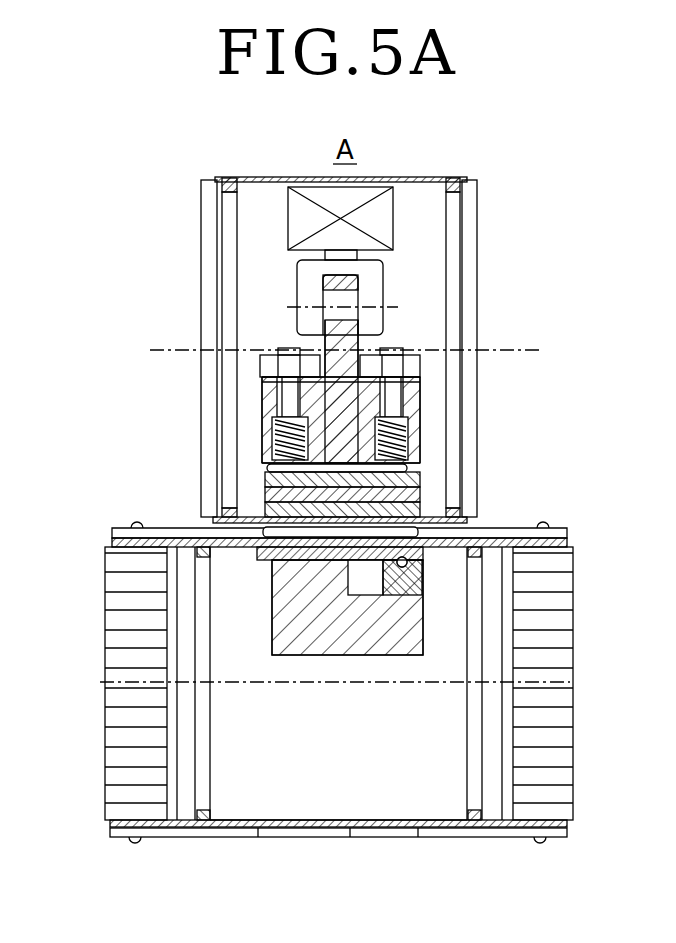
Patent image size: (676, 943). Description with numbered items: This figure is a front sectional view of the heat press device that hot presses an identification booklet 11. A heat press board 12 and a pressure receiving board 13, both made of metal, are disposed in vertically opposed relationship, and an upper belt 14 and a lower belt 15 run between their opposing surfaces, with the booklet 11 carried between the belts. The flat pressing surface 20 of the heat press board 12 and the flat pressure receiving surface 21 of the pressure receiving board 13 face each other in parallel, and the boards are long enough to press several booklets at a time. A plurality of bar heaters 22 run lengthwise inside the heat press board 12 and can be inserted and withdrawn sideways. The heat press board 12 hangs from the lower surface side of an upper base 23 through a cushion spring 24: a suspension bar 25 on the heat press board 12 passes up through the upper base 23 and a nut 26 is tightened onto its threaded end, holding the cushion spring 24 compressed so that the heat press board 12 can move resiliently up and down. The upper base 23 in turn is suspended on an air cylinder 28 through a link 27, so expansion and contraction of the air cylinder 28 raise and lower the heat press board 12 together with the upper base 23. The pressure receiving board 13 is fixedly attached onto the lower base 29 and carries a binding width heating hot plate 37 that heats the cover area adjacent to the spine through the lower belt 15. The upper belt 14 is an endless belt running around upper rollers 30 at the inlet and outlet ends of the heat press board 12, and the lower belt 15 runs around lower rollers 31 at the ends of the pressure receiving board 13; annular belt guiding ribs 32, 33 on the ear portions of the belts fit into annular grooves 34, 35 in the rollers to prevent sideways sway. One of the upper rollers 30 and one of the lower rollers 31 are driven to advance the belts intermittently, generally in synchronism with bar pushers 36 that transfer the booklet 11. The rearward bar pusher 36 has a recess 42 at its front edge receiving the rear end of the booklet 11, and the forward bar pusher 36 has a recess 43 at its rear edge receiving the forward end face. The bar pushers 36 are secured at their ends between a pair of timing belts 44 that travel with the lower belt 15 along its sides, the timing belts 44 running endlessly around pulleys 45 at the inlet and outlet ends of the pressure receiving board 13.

The identification booklet 11 is at (340, 600).
The heat press board 12 is at (418, 408).
The pressure receiving board 13 is at (290, 656).
The upper belt 14 is at (272, 181).
The lower belt 15 is at (455, 554).
The pressing surface 20 is at (420, 492).
The pressure receiving surface 21 is at (297, 562).
The bar heater 22 is at (405, 458).
The upper base 23 is at (268, 384).
The cushion spring 24 is at (266, 478).
The suspension bar 25 is at (287, 407).
The nut 26 is at (268, 357).
The link 27 is at (296, 293).
The air cylinder 28 is at (347, 250).
The lower base 29 is at (320, 636).
The upper roller 30 is at (416, 203).
The lower roller 31 is at (425, 788).
The annular belt guiding rib 32 is at (450, 186).
The annular belt guiding rib 33 is at (435, 547).
The annular groove 34 is at (455, 300).
The annular groove 35 is at (478, 713).
The bar pusher 36 is at (525, 523).
The binding width heating hot plate 37 is at (413, 650).
The recess 42 is at (302, 834).
The recess 43 is at (257, 542).
The timing belt 44 is at (137, 825).
The pulley 45 is at (123, 727).